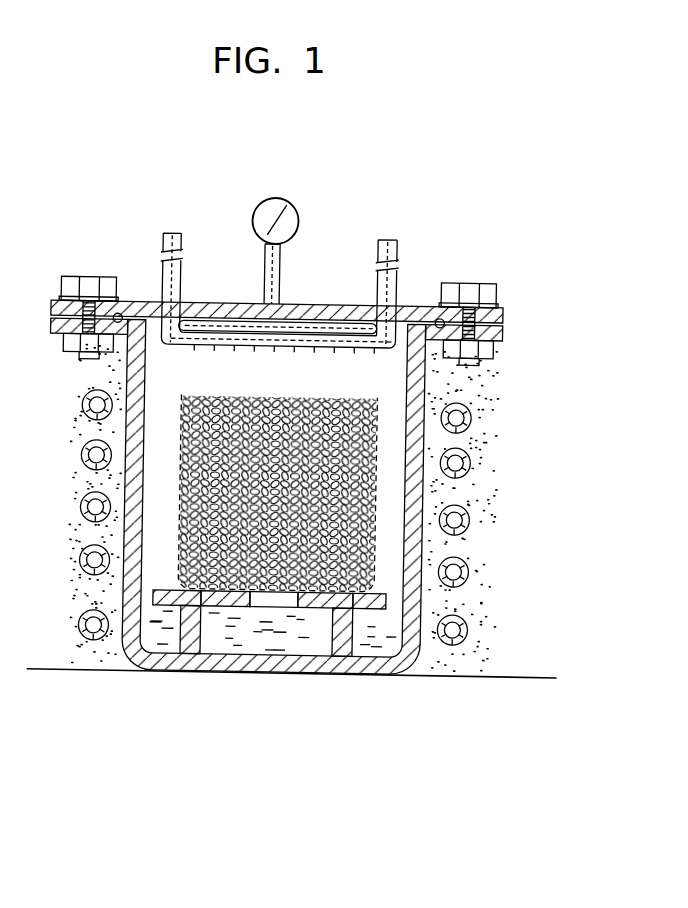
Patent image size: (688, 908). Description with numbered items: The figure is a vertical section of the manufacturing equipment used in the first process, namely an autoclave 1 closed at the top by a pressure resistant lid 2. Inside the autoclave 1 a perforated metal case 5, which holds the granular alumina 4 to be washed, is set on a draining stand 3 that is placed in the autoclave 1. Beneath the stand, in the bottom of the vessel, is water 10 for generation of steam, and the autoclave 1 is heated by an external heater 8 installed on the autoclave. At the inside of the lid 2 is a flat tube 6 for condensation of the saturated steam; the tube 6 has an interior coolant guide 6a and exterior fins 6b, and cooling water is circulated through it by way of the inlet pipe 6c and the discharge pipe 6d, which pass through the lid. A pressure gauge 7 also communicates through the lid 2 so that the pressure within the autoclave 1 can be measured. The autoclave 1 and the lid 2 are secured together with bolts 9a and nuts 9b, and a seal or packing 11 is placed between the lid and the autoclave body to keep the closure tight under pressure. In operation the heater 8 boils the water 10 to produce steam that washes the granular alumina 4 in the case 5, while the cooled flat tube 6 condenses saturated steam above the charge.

The autoclave 1 is at (419, 496).
The pressure resistant lid 2 is at (411, 306).
The draining stand 3 is at (157, 600).
The granular alumina 4 is at (388, 598).
The perforated metal case 5 is at (378, 513).
The flat tube 6 is at (302, 327).
The interior coolant guide 6a is at (256, 349).
The exterior fins 6b is at (381, 352).
The inlet pipe 6c is at (168, 234).
The discharge pipe 6d is at (381, 240).
The pressure gauge 7 is at (273, 197).
The external heater 8 is at (470, 465).
The bolts 9a is at (464, 288).
The nuts 9b is at (486, 353).
The water 10 is at (376, 652).
The seal or packing 11 is at (477, 297).